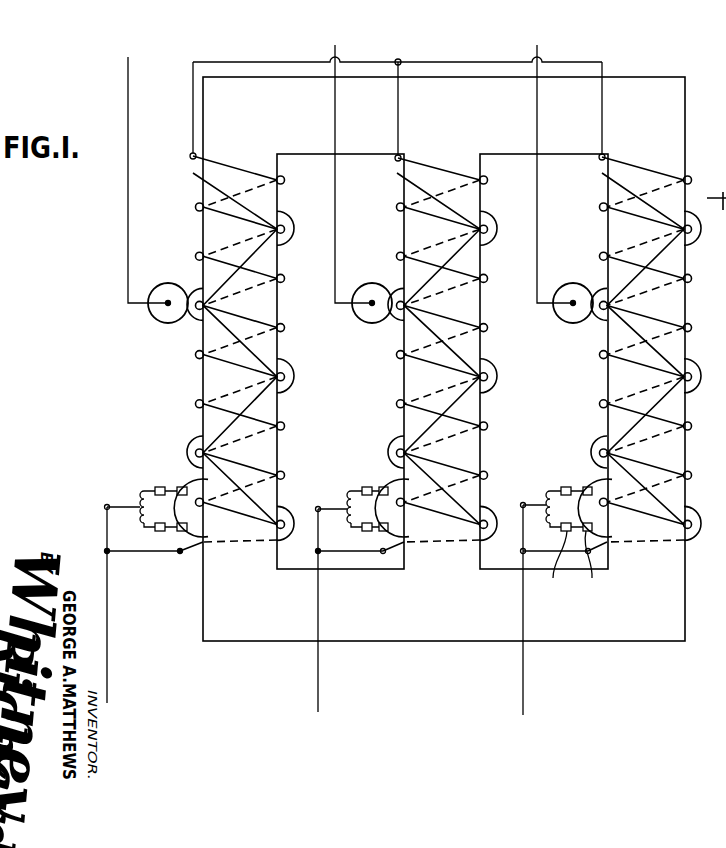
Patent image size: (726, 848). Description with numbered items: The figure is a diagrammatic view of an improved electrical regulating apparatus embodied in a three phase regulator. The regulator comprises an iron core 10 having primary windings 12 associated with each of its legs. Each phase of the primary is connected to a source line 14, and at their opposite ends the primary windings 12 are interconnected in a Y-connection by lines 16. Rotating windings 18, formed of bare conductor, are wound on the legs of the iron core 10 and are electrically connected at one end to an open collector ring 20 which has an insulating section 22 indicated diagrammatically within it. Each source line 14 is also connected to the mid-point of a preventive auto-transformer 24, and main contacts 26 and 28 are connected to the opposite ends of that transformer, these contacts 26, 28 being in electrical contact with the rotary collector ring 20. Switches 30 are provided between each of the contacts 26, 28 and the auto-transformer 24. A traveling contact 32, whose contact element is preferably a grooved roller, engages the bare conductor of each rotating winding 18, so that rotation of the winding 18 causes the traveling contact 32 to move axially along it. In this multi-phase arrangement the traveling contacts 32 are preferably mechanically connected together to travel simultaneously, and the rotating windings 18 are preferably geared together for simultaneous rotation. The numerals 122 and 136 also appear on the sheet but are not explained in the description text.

The iron core 10 is at (673, 587).
The primary windings 12 is at (692, 278).
The source line 14 is at (527, 665).
The lines 16 is at (484, 61).
The rotating windings 18 is at (693, 372).
The open collector ring 20 is at (698, 525).
The insulating section 22 is at (611, 511).
The preventive auto-transformer 24 is at (545, 500).
The main contact 26 is at (583, 485).
The main contact 28 is at (597, 569).
The switches 30 is at (554, 569).
The traveling contact 32 is at (572, 283).
The terminal 122 is at (715, 197).
The winding turn 136 is at (692, 476).